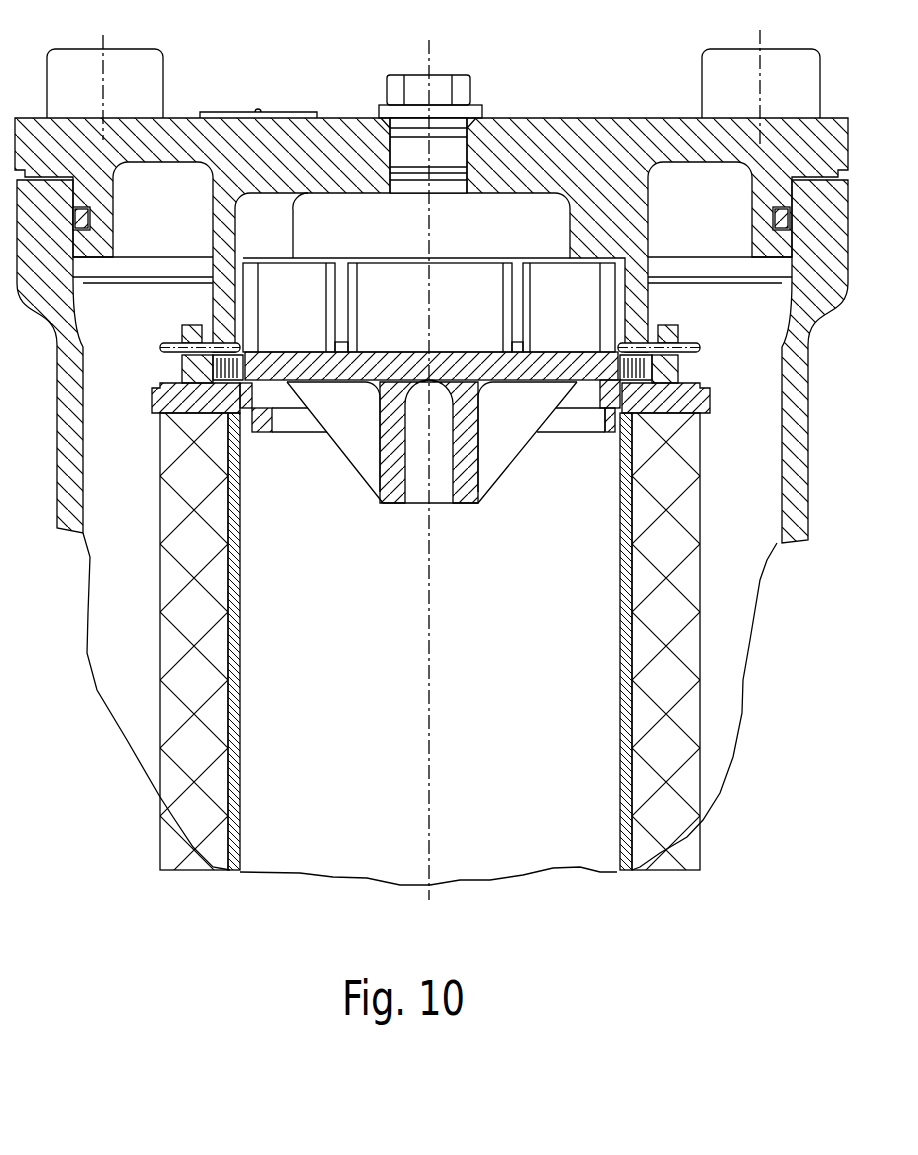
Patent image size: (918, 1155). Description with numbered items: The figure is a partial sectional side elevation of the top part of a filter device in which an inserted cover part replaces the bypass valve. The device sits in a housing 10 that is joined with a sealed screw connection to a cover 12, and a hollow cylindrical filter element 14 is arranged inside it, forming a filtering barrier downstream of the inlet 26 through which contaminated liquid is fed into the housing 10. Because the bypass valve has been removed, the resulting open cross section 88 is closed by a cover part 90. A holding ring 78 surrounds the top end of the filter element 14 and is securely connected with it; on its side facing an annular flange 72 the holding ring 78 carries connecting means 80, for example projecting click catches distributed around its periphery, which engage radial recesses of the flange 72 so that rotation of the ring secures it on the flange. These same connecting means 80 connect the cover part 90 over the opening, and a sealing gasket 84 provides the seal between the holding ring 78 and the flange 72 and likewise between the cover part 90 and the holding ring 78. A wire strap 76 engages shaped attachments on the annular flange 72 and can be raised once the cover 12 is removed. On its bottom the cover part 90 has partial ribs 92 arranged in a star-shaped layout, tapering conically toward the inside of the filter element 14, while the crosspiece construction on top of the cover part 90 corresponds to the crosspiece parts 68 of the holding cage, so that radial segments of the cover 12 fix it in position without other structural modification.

The housing 10 is at (68, 458).
The cover 12 is at (533, 167).
The filter element 14 is at (663, 823).
The inlet 26 is at (88, 568).
The crosspiece parts 68 is at (310, 326).
The annular flange 72 is at (668, 328).
The wire strap 76 is at (165, 340).
The holding ring 78 is at (688, 378).
The connecting means 80 is at (182, 368).
The sealing gasket 84 is at (264, 420).
The open cross section 88 is at (573, 392).
The cover part 90 is at (398, 505).
The partial ribs 92 is at (525, 423).